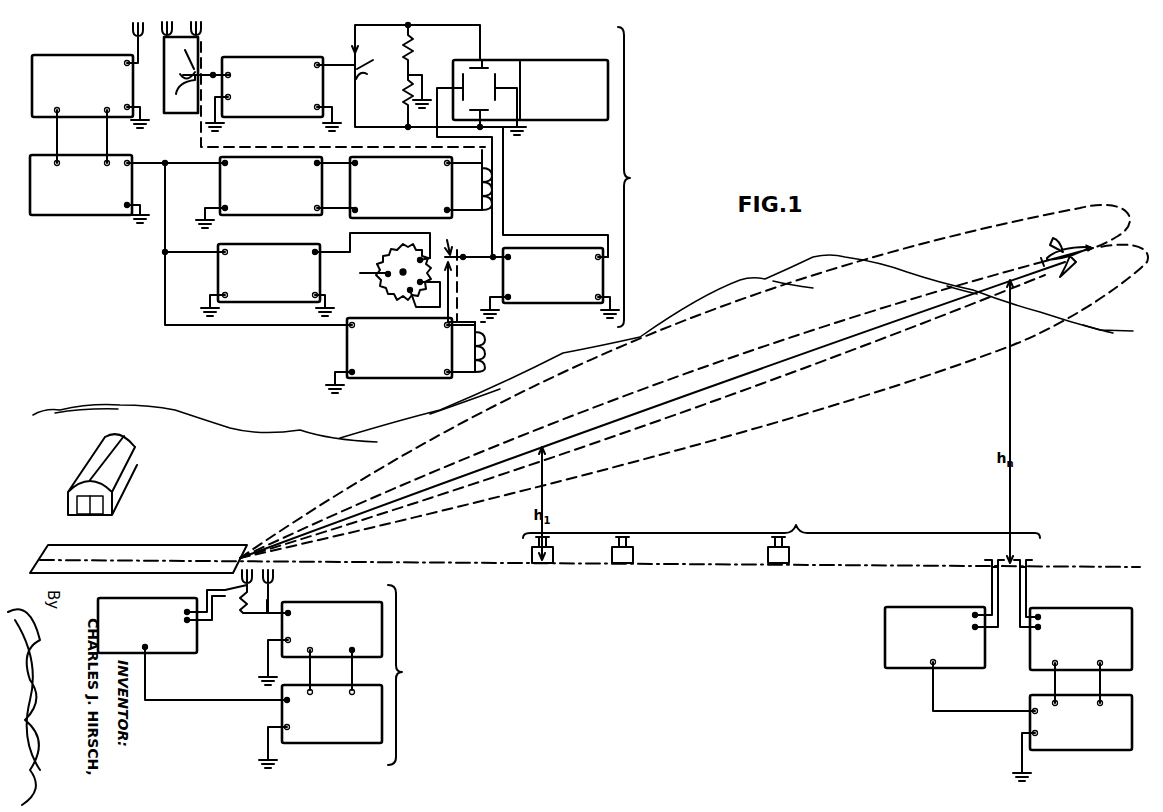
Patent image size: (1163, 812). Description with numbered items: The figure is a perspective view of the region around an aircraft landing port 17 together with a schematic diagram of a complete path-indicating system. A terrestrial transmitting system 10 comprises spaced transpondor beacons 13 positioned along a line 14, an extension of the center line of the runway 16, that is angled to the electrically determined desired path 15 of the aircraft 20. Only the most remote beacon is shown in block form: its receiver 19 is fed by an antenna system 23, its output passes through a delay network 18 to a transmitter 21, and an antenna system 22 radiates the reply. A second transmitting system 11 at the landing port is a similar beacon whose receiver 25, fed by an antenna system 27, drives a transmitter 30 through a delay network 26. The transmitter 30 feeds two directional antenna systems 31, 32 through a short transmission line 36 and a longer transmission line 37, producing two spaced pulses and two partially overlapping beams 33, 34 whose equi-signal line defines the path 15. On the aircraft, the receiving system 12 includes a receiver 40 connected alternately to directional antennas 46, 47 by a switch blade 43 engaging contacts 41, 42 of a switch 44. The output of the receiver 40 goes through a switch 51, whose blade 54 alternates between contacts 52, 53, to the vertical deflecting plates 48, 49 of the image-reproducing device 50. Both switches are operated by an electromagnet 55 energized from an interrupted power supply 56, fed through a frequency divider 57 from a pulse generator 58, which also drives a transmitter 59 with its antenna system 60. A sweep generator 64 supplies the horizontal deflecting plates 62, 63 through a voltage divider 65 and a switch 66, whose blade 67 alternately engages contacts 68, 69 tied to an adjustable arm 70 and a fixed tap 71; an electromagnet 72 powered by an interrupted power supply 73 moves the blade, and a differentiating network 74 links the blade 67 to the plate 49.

The transmitting system 10 is at (789, 523).
The second transmitting system 11 is at (406, 679).
The receiving system 12 is at (637, 180).
The beacons 13 is at (550, 593).
The line 14 is at (691, 562).
The desired path 15 is at (819, 352).
The runway 16 is at (150, 545).
The landing port 17 is at (197, 520).
The delay network 18 is at (1030, 727).
The receiver 19 is at (935, 607).
The aircraft 20 is at (1066, 246).
The transmitter 21 is at (1082, 608).
The antenna system 22 is at (1034, 562).
The antenna system 23 is at (988, 562).
The receiver 25 is at (199, 641).
The delay network 26 is at (306, 744).
The antenna system 27 is at (203, 593).
The transmitter 30 is at (336, 602).
The directional antenna system 31 is at (274, 582).
The directional antenna system 32 is at (234, 581).
The beam 33 is at (1054, 209).
The beam 34 is at (1117, 292).
The transmission line 36 is at (280, 594).
The transmission line 37 is at (242, 609).
The receiver 40 is at (272, 57).
The contact 41 is at (186, 54).
The contact 42 is at (183, 92).
The switch blade 43 is at (182, 69).
The switch 44 is at (220, 64).
The directional antenna 46 is at (181, 59).
The directional antenna 47 is at (205, 35).
The vertical deflecting plate 48 is at (485, 62).
The vertical deflecting plate 49 is at (488, 110).
The image-reproducing device 50 is at (520, 80).
The switch 51 is at (397, 78).
The contact 52 is at (353, 46).
The contact 53 is at (368, 80).
The switch blade 54 is at (372, 55).
The electromagnet 55 is at (480, 195).
The interrupted power supply 56 is at (383, 157).
The frequency divider 57 is at (268, 157).
The pulse generator 58 is at (88, 216).
The transmitter 59 is at (72, 55).
The antenna system 60 is at (136, 41).
The horizontal deflecting plate 62 is at (453, 88).
The horizontal deflecting plate 63 is at (498, 78).
The sweep generator 64 is at (265, 304).
The voltage divider 65 is at (394, 250).
The switch 66 is at (480, 295).
The switch blade 67 is at (476, 247).
The contact 68 is at (459, 239).
The contact 69 is at (462, 266).
The adjustable arm 70 is at (363, 273).
The fixed tap 71 is at (396, 296).
The electromagnet 72 is at (484, 345).
The interrupted power supply 73 is at (369, 378).
The differentiating network 74 is at (530, 303).